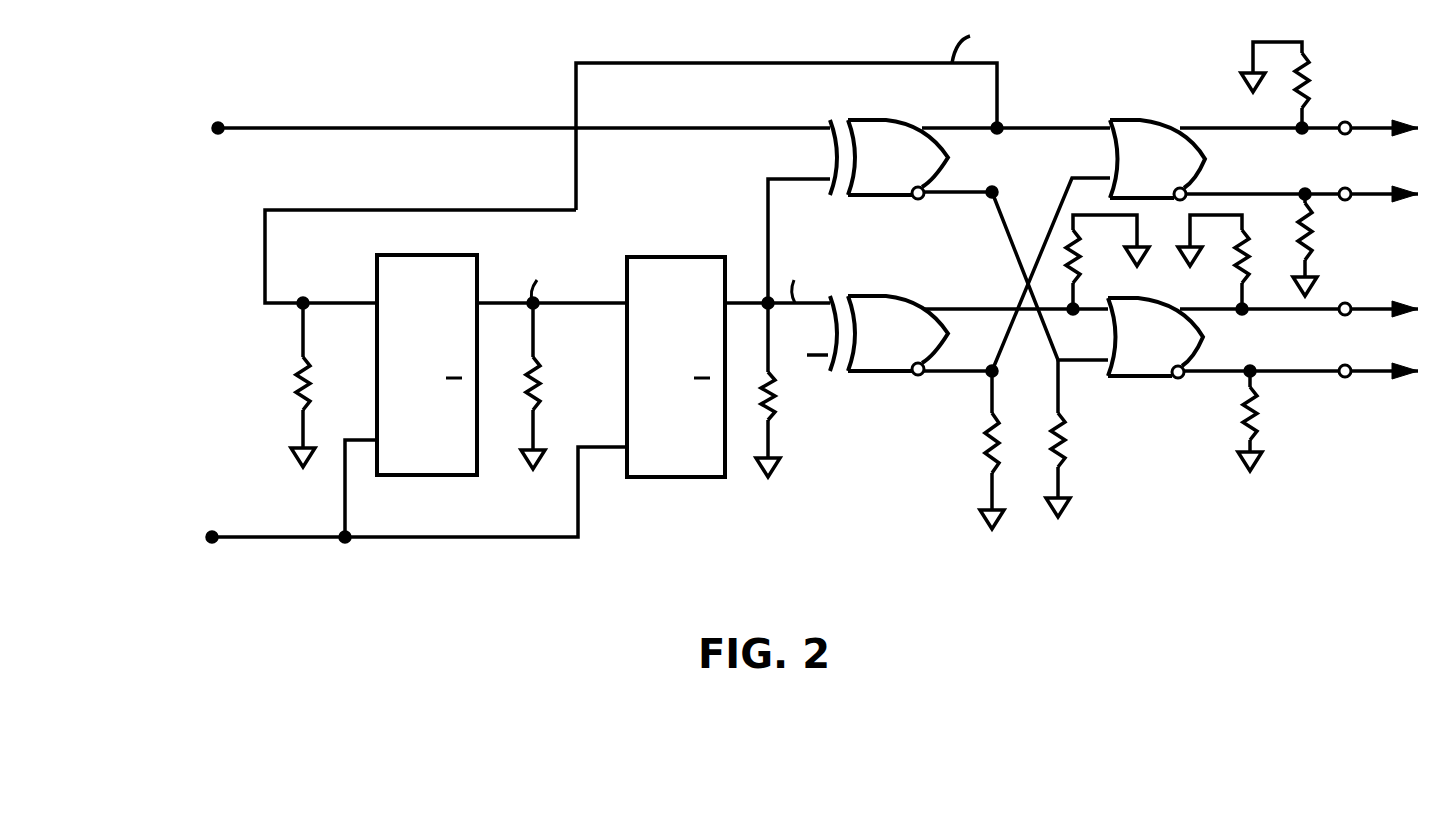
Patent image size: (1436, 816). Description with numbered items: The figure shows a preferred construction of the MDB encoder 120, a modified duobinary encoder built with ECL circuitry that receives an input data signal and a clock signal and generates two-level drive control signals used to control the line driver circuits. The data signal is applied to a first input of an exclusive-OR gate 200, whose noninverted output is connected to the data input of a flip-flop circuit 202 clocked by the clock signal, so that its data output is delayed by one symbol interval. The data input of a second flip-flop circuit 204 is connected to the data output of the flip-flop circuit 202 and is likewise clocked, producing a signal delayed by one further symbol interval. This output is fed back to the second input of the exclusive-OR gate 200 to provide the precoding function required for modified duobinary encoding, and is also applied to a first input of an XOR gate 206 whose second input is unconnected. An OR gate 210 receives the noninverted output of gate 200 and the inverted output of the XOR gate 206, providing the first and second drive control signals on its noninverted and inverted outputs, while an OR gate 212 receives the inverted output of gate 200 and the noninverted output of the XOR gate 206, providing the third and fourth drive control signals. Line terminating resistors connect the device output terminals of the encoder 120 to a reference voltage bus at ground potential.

The MDB encoder 120 is at (797, 523).
The exclusive-OR gate 200 is at (868, 195).
The flip-flop circuit 202 is at (413, 477).
The second flip-flop circuit 204 is at (683, 479).
The XOR gate 206 is at (877, 373).
The OR gate 210 is at (1125, 118).
The OR gate 212 is at (1135, 378).